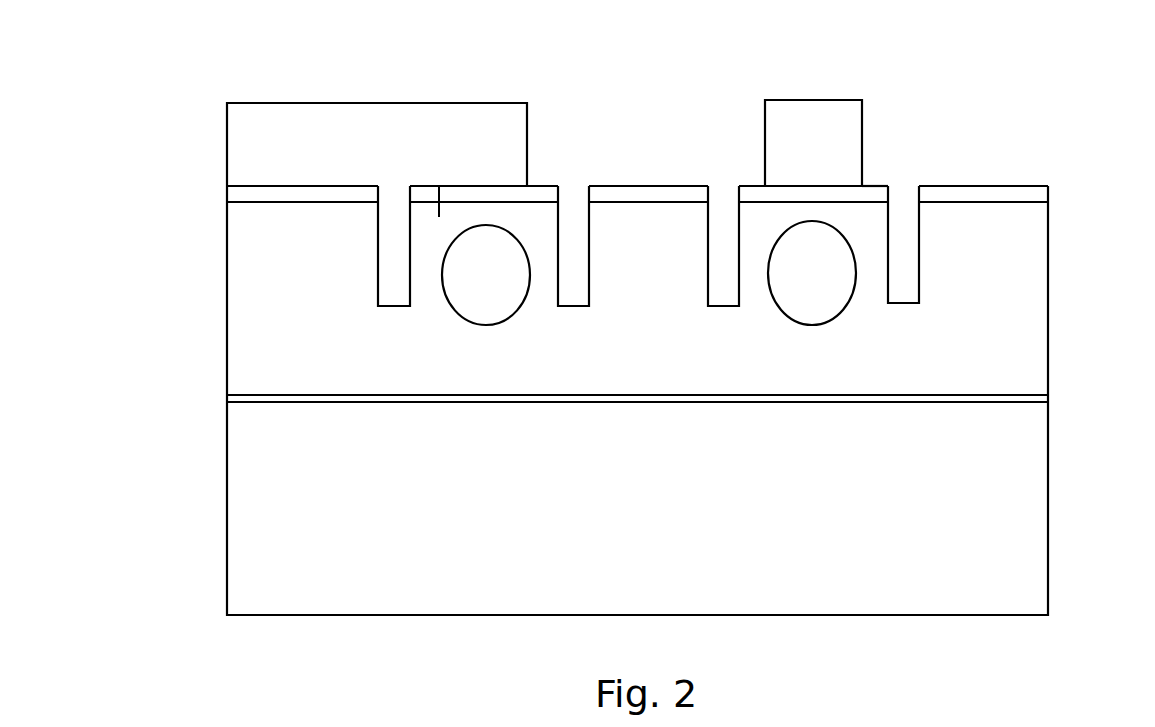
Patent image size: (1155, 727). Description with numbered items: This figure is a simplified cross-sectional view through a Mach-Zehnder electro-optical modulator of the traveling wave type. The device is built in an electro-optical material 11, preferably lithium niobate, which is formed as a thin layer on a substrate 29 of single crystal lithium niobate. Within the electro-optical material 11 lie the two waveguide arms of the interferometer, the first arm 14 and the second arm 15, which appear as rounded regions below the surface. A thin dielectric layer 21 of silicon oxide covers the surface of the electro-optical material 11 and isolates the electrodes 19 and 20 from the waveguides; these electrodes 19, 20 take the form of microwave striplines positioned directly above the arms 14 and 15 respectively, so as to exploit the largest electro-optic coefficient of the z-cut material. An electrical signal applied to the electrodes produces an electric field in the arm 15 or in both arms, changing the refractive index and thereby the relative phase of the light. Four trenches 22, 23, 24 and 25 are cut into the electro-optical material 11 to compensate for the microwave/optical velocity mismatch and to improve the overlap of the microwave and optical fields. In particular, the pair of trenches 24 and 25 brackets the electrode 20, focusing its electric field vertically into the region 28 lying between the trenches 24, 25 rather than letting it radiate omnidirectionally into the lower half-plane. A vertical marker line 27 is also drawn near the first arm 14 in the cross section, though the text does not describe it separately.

The electro-optical material 11 is at (1023, 329).
The first arm 14 is at (487, 237).
The second arm 15 is at (792, 247).
The electrode 19 is at (290, 115).
The electrode 20 is at (823, 117).
The dielectric layer 21 is at (1037, 188).
The trench 22 is at (385, 243).
The trench 23 is at (572, 200).
The trench 24 is at (722, 197).
The trench 25 is at (905, 208).
The boundary line 27 is at (439, 186).
The region 28 is at (865, 212).
The substrate 29 is at (1033, 512).